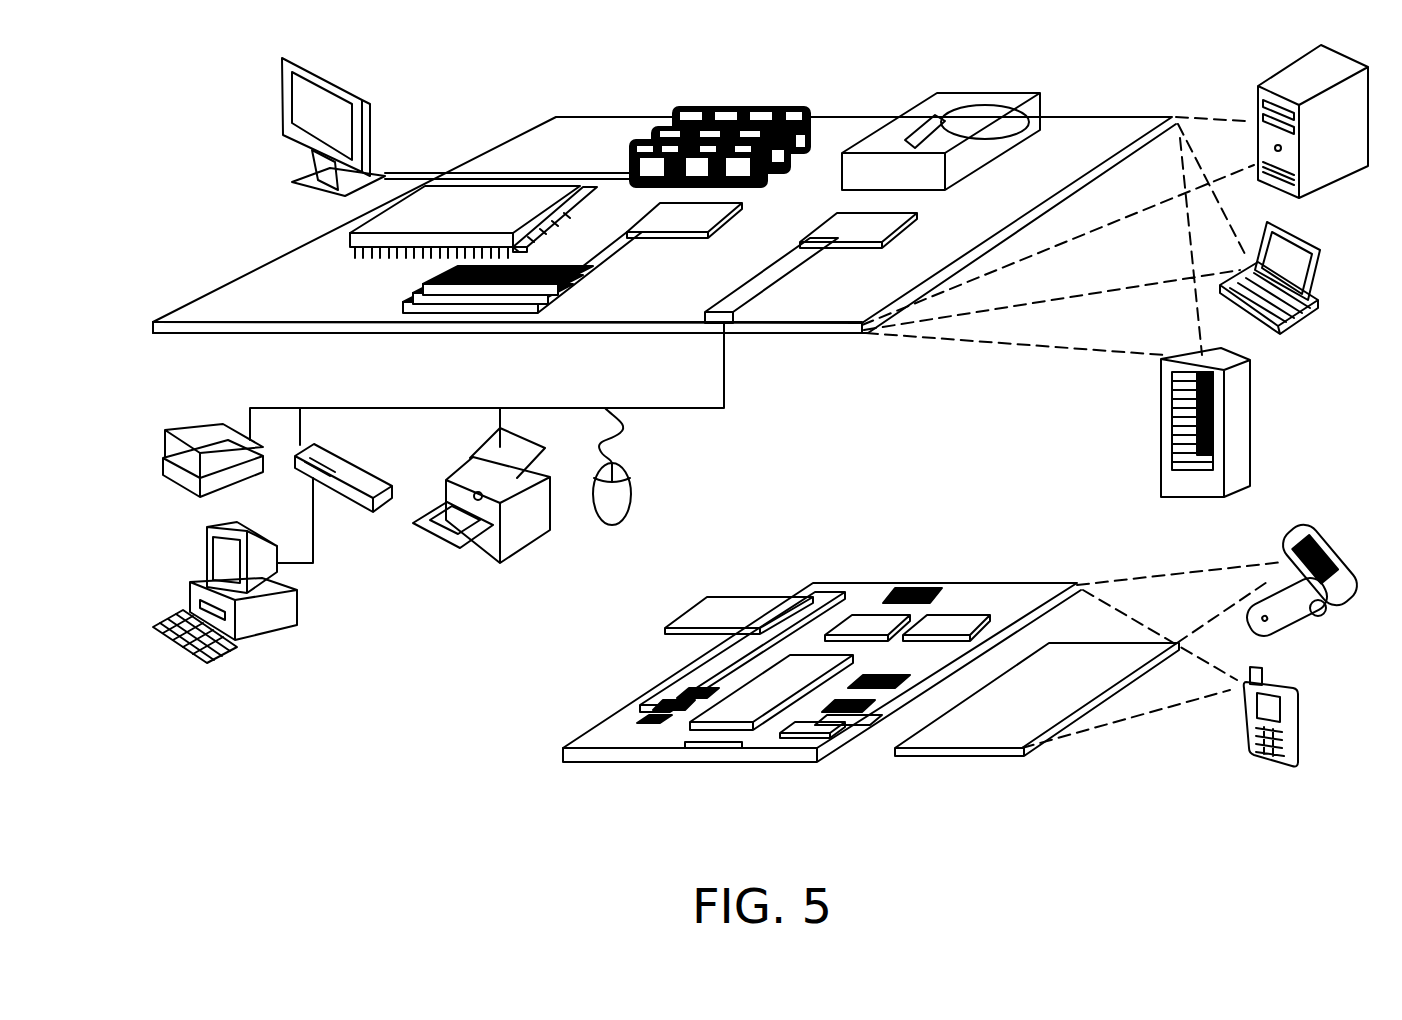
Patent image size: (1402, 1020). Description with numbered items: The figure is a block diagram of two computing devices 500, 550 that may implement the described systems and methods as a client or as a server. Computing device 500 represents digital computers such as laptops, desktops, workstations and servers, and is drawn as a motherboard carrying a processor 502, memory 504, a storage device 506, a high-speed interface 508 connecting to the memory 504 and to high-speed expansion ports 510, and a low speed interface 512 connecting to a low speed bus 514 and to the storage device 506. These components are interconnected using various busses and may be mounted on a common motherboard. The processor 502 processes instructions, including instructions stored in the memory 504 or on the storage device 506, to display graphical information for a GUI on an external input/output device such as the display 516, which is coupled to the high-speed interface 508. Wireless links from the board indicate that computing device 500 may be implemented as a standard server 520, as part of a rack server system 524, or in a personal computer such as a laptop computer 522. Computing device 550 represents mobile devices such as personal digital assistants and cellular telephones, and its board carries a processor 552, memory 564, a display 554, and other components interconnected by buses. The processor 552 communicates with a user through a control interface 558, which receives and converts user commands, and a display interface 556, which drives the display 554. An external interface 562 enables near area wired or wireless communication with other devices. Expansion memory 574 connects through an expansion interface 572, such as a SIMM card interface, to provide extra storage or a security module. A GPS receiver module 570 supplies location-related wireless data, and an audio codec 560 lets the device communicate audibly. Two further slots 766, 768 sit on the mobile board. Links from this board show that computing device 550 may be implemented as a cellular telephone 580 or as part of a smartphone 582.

The computing device 500 is at (484, 86).
The processor 502 is at (313, 240).
The memory 504 is at (696, 105).
The storage device 506 is at (928, 92).
The high-speed interface 508 is at (598, 172).
The high-speed expansion ports 510 is at (417, 300).
The low speed interface 512 is at (836, 225).
The low speed bus 514 is at (760, 334).
The display 516 is at (290, 58).
The standard server 520 is at (1258, 97).
The laptop computer 522 is at (1328, 248).
The rack server system 524 is at (1161, 446).
The computing device 550 is at (541, 758).
The processor 552 is at (740, 738).
The display 554 is at (1010, 740).
The display interface 556 is at (832, 735).
The control interface 558 is at (858, 728).
The audio codec 560 is at (880, 725).
The external interface 562 is at (707, 762).
The memory 564 is at (657, 698).
The GPS receiver module 570 is at (908, 585).
The expansion interface 572 is at (793, 597).
The expansion memory 574 is at (722, 600).
The cellular telephone 580 is at (1292, 540).
The smartphone 582 is at (1246, 720).
The slot 766 is at (860, 612).
The slot 768 is at (948, 615).